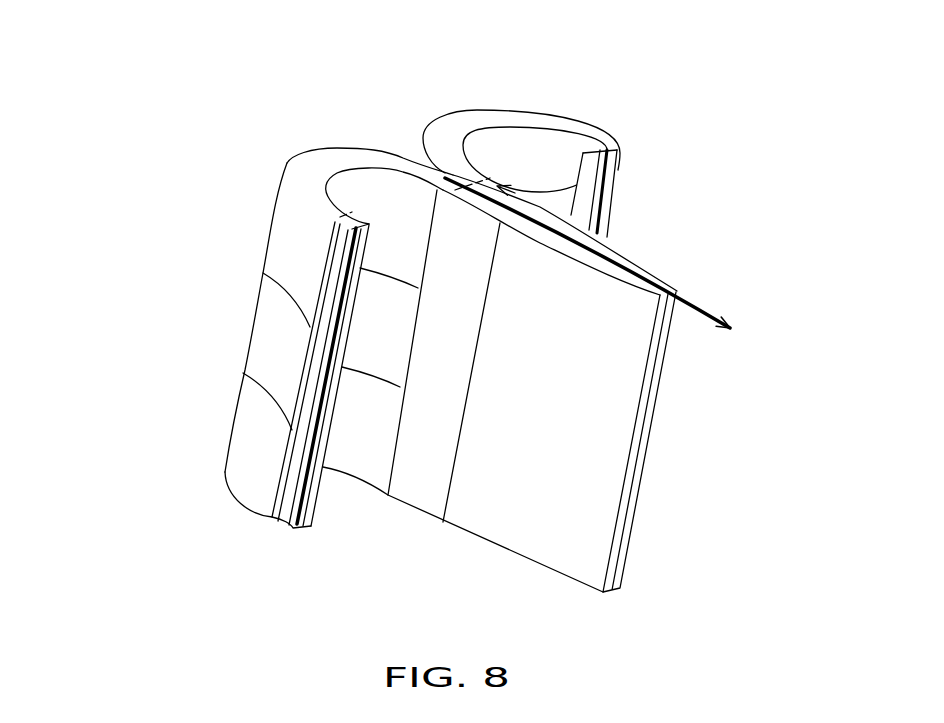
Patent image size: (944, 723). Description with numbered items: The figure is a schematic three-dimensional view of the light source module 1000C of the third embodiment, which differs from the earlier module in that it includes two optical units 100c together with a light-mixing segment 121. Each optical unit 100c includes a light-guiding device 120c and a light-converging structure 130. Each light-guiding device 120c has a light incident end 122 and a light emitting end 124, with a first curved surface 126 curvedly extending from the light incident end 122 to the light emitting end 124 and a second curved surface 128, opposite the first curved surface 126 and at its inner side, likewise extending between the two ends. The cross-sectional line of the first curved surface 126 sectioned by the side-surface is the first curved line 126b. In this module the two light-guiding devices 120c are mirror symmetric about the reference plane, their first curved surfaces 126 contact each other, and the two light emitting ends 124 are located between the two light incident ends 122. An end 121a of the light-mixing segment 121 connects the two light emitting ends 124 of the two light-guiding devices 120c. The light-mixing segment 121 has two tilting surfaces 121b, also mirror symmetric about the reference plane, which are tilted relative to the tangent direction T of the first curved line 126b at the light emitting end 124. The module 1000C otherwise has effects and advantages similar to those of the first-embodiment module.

The optical unit 100c is at (207, 405).
The light-guiding device 120c is at (307, 160).
The light-mixing segment 121 is at (640, 268).
The end of the light-mixing segment 121a is at (588, 160).
The tilting surface 121b is at (617, 250).
The light incident end 122 is at (333, 217).
The light emitting end 124 is at (444, 188).
The first curved surface 126 is at (286, 165).
The first curved line 126b is at (303, 165).
The second curved surface 128 is at (343, 170).
The light-converging structure 130 is at (340, 226).
The light source module 1000C is at (769, 621).
The tangent direction T is at (596, 263).